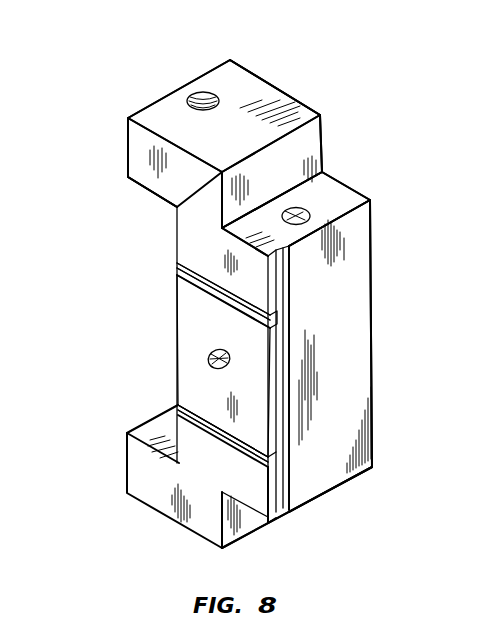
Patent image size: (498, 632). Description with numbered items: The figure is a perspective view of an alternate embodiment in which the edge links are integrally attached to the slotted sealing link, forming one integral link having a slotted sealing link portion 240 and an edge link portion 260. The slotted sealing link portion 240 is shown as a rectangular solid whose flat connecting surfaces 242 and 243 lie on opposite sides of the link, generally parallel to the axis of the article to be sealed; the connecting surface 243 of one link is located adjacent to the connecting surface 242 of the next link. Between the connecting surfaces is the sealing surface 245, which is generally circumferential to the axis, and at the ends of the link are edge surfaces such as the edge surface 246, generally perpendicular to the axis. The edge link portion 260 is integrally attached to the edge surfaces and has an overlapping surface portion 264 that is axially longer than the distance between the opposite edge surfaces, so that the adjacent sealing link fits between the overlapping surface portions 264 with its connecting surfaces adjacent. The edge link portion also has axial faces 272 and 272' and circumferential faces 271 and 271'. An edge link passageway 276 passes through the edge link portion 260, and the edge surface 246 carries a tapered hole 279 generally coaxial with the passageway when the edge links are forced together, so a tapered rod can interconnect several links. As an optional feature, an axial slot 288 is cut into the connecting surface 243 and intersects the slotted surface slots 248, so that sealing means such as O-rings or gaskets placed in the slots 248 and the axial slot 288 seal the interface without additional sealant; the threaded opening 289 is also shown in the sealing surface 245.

The slotted sealing link portion 240 is at (393, 223).
The connecting surface 242 is at (177, 300).
The connecting surface 243 is at (355, 347).
The sealing surface 245 is at (190, 337).
The edge surface 246 is at (353, 200).
The slotted surface slot 248 is at (183, 263).
The edge link portion 260 is at (290, 85).
The overlapping surface portion 264 is at (153, 196).
The circumferential face 271 is at (125, 162).
The circumferential face 271' is at (275, 63).
The axial face 272 is at (179, 116).
The axial face 272' is at (318, 157).
The edge link passageway 276 is at (191, 95).
The tapered hole 279 is at (298, 212).
The axial slot 288 is at (287, 487).
The threaded hole 289 is at (208, 366).